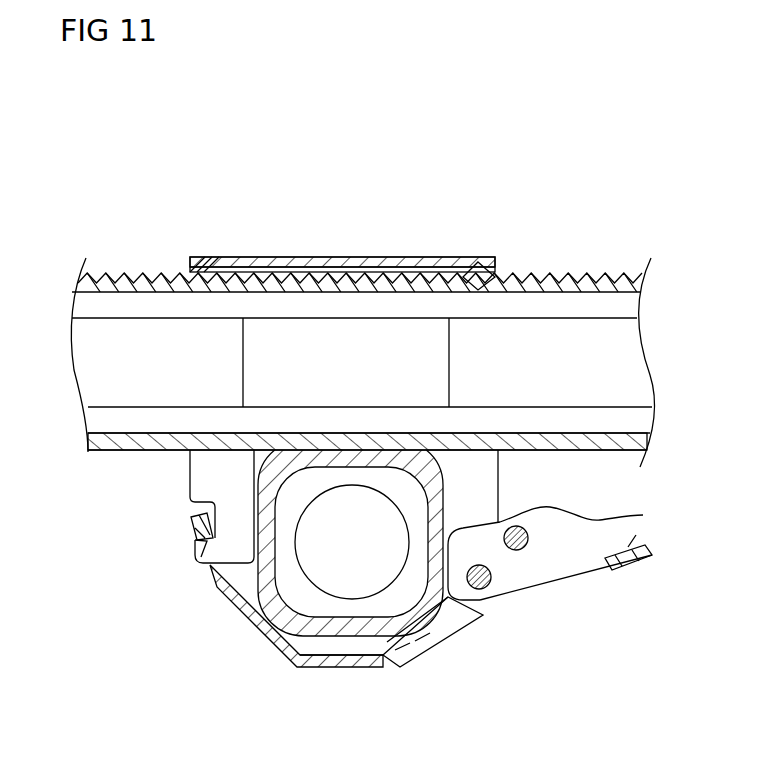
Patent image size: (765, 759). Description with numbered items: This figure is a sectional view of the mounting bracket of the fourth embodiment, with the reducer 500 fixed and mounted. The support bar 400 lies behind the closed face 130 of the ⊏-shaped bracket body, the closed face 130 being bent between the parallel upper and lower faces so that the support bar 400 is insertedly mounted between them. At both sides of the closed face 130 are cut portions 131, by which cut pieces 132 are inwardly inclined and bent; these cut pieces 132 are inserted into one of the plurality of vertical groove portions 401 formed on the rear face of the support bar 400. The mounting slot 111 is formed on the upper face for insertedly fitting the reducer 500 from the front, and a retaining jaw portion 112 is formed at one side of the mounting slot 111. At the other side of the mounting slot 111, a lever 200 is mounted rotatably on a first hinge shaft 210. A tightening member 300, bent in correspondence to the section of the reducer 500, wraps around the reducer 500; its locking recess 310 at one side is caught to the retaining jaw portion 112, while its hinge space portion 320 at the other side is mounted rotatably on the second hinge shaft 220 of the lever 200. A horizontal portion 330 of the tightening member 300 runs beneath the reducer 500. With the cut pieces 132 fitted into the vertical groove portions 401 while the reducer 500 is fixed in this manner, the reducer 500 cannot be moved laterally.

The mounting slot 111 is at (448, 503).
The retaining jaw portion 112 is at (190, 525).
The closed face 130 is at (320, 255).
The cut portion 131 is at (192, 257).
The cut piece 132 is at (193, 263).
The lever 200 is at (630, 560).
The first hinge shaft 210 is at (480, 587).
The second hinge shaft 220 is at (523, 549).
The tightening member 300 is at (262, 608).
The locking recess 310 is at (200, 553).
The hinge space portion 320 is at (462, 625).
The horizontal portion 330 is at (352, 640).
The support bar 400 is at (605, 287).
The vertical groove portion 401 is at (533, 273).
The reducer 500 is at (278, 478).